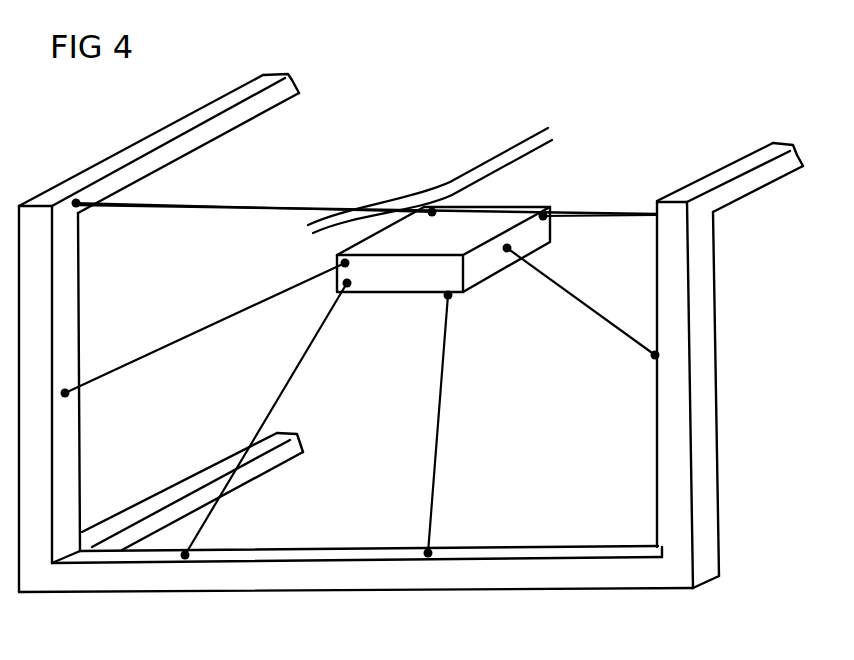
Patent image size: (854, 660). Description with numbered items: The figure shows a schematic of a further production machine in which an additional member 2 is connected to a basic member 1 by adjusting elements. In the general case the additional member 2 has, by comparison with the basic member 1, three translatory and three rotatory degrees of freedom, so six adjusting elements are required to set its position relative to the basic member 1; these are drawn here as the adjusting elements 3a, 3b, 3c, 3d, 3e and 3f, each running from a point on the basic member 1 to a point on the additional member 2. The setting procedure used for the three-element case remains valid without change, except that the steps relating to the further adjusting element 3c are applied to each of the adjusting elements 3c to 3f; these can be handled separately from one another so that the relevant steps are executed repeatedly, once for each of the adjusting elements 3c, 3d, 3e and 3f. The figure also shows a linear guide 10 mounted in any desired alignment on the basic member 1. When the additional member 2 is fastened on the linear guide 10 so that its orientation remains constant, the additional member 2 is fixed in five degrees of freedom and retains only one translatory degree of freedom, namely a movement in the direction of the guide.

The basic member 1 is at (312, 577).
The additional member 2 is at (497, 216).
The adjusting element 3a is at (304, 352).
The adjusting element 3b is at (211, 322).
The adjusting element 3c is at (296, 207).
The adjusting element 3d is at (444, 378).
The adjusting element 3e is at (580, 298).
The adjusting element 3f is at (596, 214).
The linear guide 10 is at (412, 199).